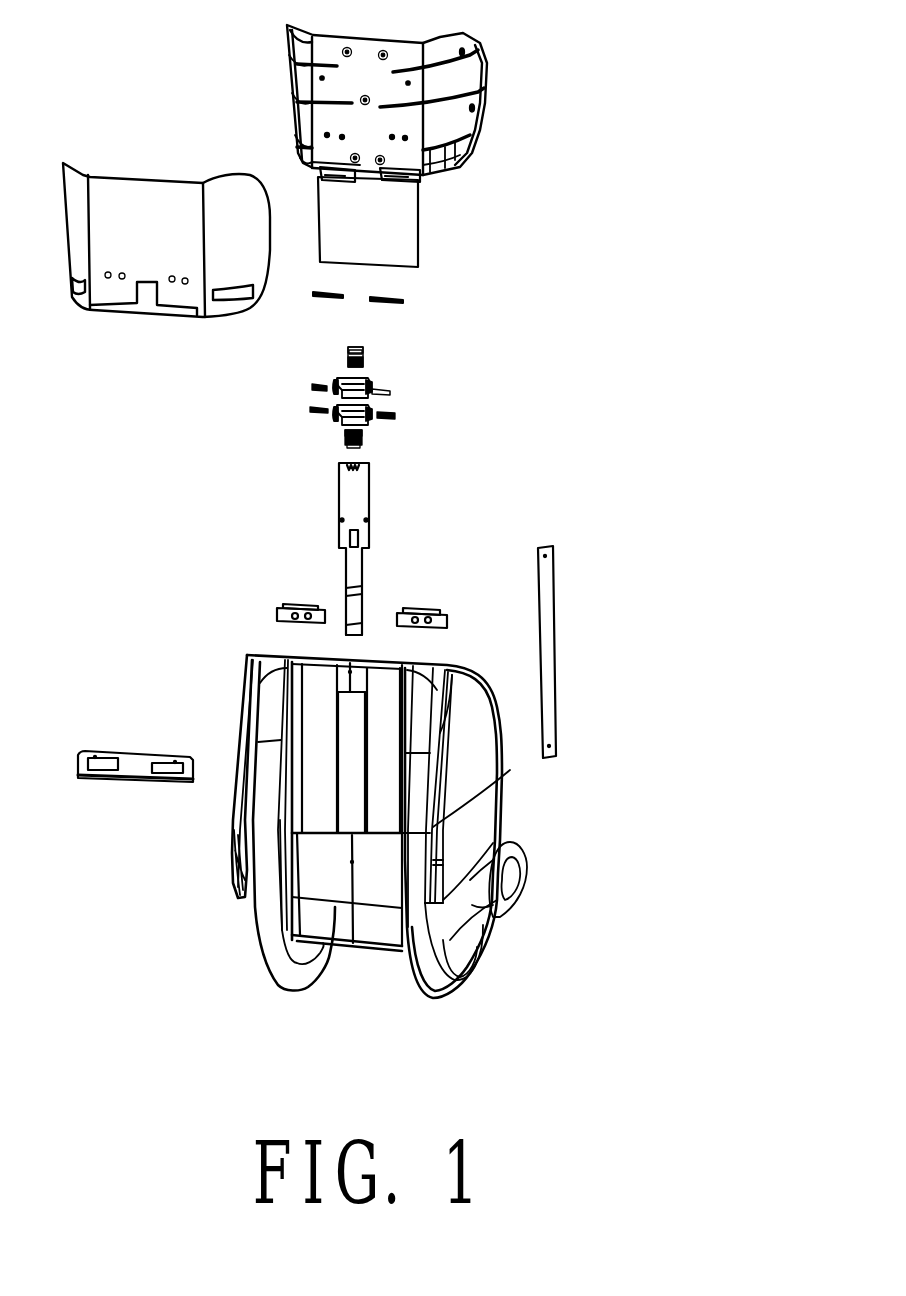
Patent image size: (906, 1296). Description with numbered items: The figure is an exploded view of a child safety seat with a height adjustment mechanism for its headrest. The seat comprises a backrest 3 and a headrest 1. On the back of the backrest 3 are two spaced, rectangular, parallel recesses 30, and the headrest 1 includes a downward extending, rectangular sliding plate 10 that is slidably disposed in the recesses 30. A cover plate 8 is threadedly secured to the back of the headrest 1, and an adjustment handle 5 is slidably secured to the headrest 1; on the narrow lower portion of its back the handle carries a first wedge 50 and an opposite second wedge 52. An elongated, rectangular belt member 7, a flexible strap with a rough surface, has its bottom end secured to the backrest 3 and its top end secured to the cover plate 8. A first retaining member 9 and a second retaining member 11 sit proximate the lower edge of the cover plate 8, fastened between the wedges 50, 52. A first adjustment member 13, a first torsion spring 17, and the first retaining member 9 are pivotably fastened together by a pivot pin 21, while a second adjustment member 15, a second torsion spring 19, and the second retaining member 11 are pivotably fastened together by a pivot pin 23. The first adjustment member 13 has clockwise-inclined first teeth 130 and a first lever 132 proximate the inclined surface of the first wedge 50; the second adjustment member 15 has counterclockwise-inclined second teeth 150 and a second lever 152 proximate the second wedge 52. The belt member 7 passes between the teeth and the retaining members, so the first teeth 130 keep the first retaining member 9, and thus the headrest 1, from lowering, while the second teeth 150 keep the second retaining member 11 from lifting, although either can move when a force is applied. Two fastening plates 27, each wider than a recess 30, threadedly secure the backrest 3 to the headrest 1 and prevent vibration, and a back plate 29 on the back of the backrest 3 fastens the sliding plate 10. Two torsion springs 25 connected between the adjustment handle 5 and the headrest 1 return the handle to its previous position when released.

The headrest 1 is at (463, 110).
The backrest 3 is at (472, 843).
The adjustment handle 5 is at (362, 497).
The belt member 7 is at (547, 587).
The cover plate 8 is at (142, 212).
The first retaining member 9 is at (366, 378).
The sliding plate 10 is at (460, 173).
The second retaining member 11 is at (370, 406).
The first adjustment member 13 is at (364, 378).
The second adjustment member 15 is at (362, 437).
The first torsion spring 17 is at (312, 387).
The second torsion spring 19 is at (395, 414).
The pivot pin 21 is at (390, 391).
The pivot pin 23 is at (312, 410).
The torsion springs 25 is at (320, 294).
The fastening plates 27 is at (283, 610).
The back plate 29 is at (133, 765).
The recesses 30 is at (387, 787).
The first wedge 50 is at (362, 593).
The second wedge 52 is at (362, 630).
The first teeth 130 is at (345, 360).
The first lever 132 is at (352, 347).
The second teeth 150 is at (347, 440).
The second lever 152 is at (343, 450).